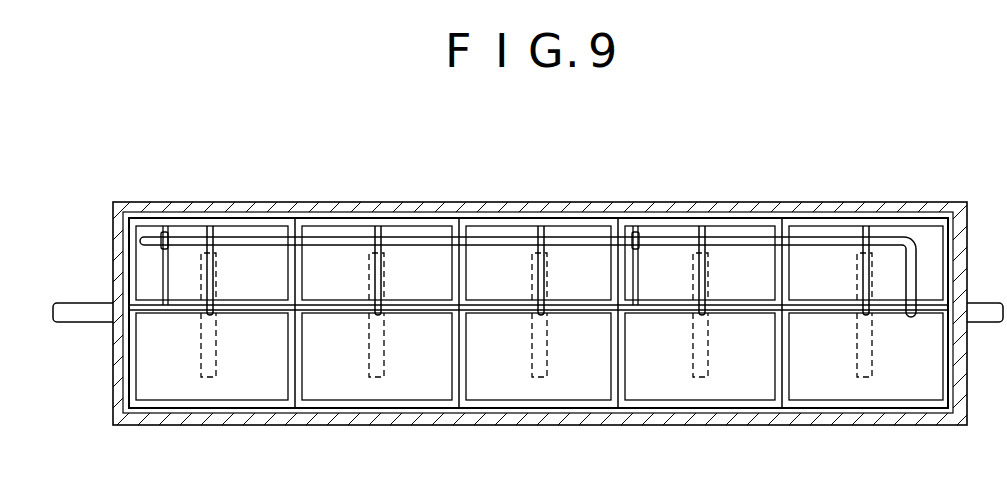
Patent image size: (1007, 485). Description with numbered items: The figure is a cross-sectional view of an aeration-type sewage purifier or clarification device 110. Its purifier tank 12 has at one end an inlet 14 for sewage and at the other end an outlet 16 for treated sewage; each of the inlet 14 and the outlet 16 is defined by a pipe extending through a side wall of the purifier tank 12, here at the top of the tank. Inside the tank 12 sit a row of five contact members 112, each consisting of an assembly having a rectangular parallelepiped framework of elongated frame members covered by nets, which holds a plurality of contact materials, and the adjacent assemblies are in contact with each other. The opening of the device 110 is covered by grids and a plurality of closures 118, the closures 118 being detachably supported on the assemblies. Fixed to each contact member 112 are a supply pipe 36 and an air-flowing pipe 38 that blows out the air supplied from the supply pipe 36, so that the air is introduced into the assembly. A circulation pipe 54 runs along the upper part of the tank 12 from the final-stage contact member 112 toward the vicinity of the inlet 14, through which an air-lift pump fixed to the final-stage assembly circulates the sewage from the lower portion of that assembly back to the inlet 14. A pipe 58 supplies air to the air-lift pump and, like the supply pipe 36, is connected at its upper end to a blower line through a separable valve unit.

The sewage purifier 110 is at (863, 154).
The purifier tank 12 is at (118, 413).
The inlet 14 is at (75, 313).
The outlet 16 is at (978, 320).
The contact member 112 is at (276, 224).
The closure 118 is at (258, 387).
The circulation pipe 54 is at (663, 238).
The pipe for supplying air to the air-lift pump 58 is at (920, 282).
The supply pipe 36 is at (216, 271).
The air-flowing pipe 38 is at (216, 338).